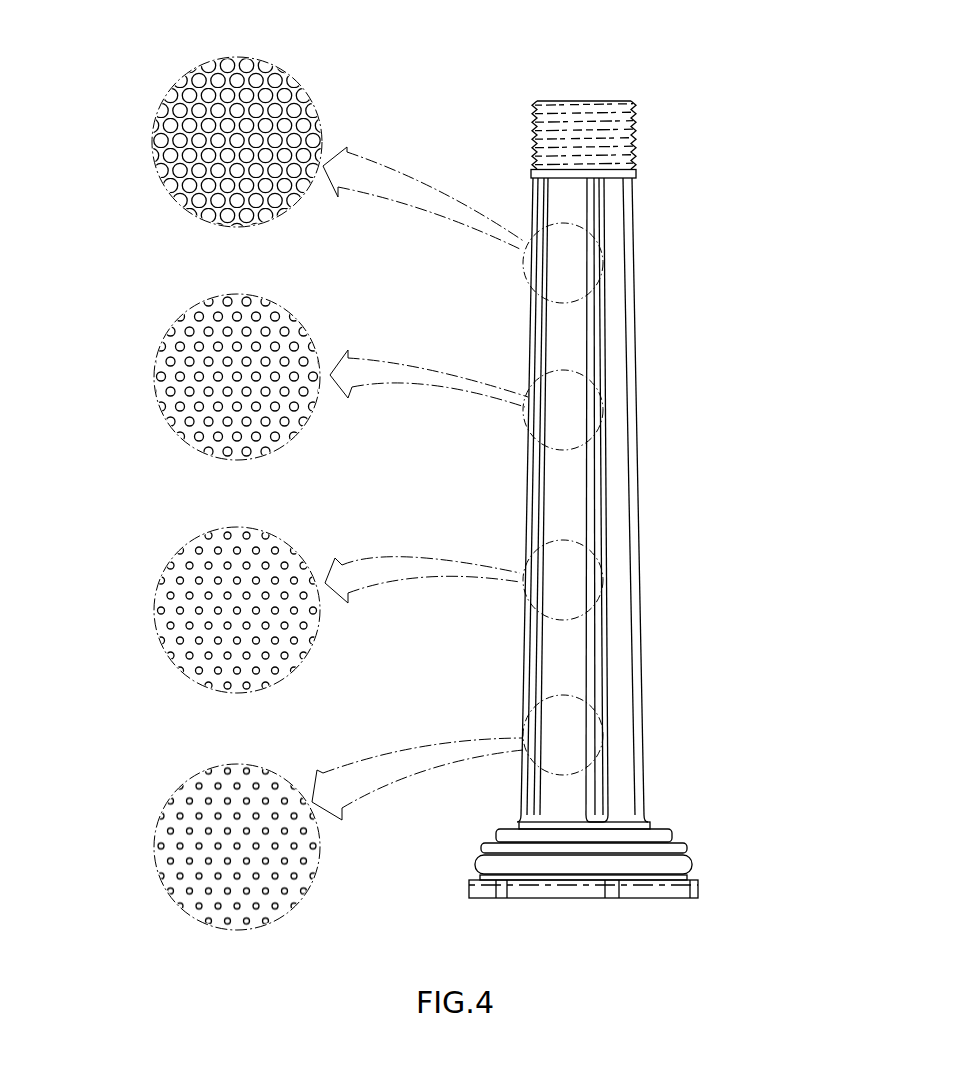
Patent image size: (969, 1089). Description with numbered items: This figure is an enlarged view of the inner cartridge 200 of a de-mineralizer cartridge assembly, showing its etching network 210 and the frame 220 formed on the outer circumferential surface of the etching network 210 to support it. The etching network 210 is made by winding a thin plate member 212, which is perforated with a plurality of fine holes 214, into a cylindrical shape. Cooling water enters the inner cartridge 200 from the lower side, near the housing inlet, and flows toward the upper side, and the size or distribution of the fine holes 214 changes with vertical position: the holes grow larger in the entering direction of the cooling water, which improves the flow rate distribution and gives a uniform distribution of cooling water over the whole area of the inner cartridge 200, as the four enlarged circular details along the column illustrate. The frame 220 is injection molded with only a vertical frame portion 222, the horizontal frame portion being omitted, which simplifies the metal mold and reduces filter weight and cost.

The inner cartridge 200 is at (520, 98).
The frame 220 is at (645, 167).
The vertical frame portion 222 is at (598, 325).
The etching network 210 is at (548, 496).
The thin plate member 212 is at (158, 830).
The fine holes 214 is at (181, 170).